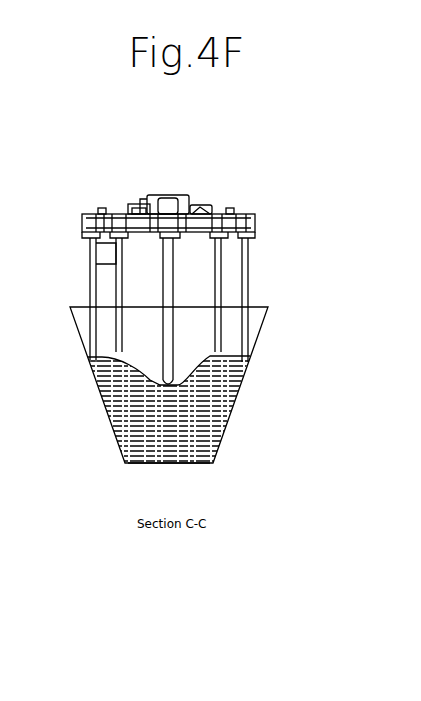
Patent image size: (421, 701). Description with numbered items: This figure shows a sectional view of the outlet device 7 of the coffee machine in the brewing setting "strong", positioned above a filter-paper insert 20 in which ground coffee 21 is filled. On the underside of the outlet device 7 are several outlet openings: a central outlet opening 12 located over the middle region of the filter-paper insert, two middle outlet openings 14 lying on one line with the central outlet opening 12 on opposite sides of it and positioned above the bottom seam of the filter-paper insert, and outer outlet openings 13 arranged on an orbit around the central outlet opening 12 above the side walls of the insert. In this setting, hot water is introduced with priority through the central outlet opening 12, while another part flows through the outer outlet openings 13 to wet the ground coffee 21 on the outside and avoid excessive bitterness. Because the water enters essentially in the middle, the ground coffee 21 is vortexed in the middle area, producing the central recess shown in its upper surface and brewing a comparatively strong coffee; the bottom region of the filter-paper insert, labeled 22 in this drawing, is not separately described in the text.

The outlet device 7 is at (191, 201).
The central outlet opening 12 is at (206, 217).
The outer outlet openings 13 is at (82, 218).
The middle outlet openings 14 is at (128, 218).
The filter-paper insert 20 is at (264, 328).
The ground coffee 21 is at (198, 418).
The container bottom 22 is at (168, 464).